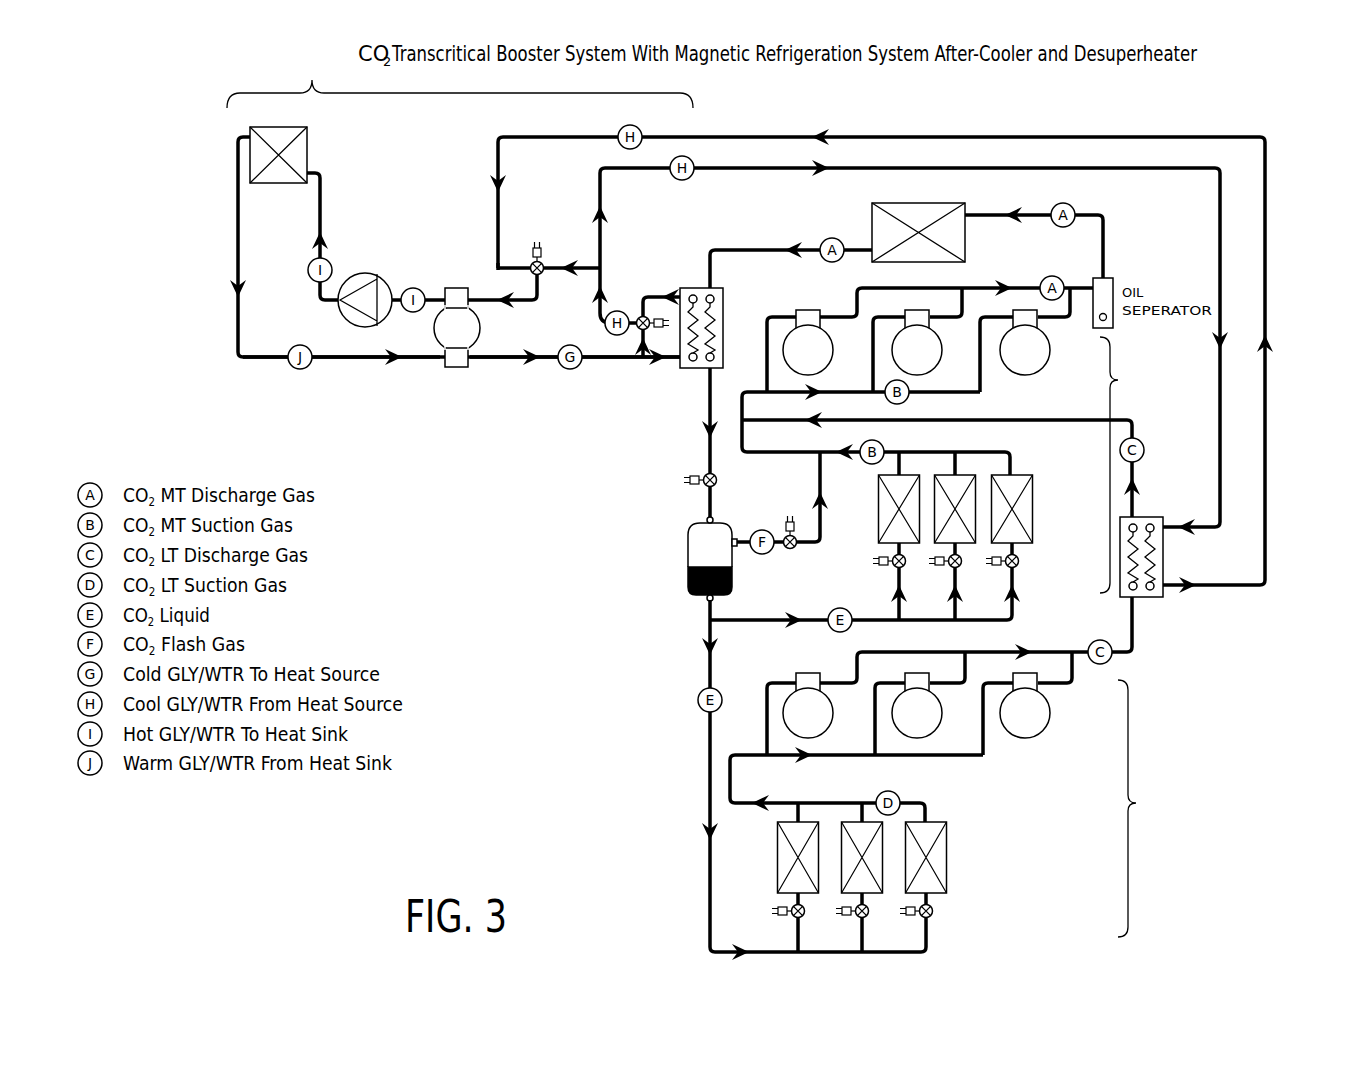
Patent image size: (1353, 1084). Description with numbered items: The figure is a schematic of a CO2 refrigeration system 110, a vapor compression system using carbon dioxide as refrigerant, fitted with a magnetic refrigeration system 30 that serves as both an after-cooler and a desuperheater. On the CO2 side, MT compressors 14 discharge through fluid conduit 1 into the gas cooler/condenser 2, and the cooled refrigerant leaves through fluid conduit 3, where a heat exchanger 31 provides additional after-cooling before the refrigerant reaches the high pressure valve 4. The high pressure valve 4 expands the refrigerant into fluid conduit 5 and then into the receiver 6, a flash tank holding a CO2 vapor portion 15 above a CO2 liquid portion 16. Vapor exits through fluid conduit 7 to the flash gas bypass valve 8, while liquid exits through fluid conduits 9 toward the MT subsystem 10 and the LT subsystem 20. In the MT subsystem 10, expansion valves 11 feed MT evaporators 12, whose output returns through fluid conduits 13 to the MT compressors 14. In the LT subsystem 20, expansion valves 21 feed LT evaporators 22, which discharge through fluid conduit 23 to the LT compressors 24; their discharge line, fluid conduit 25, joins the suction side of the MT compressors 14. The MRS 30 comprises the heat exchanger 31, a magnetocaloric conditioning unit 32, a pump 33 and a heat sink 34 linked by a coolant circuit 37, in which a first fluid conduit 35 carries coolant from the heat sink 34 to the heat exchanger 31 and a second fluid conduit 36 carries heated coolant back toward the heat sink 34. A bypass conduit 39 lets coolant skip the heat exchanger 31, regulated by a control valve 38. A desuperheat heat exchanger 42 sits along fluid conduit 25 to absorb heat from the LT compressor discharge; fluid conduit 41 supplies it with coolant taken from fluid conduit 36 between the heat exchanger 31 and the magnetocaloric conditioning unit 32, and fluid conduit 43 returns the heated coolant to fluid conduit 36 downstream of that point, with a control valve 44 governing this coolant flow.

The fluid conduit 1 is at (1105, 233).
The gas cooler/condenser 2 is at (965, 235).
The fluid conduit 3 is at (742, 248).
The high pressure valve 4 is at (718, 479).
The fluid conduit 5 is at (707, 500).
The receiver 6 is at (688, 574).
The fluid conduit 7 is at (744, 535).
The flash gas bypass valve 8 is at (803, 530).
The fluid conduit 9 is at (739, 627).
The medium-temperature subsystem 10 is at (946, 436).
The expansion valve 11 is at (1020, 567).
The MT evaporator 12 is at (1030, 477).
The fluid conduit 13 is at (825, 458).
The MT compressor 14 is at (1050, 350).
The CO2 vapor portion 15 is at (710, 545).
The CO2 liquid portion 16 is at (710, 581).
The low-temperature subsystem 20 is at (950, 802).
The expansion valve 21 is at (933, 916).
The LT evaporator 22 is at (942, 824).
The fluid conduit 23 is at (732, 808).
The LT compressor 24 is at (1050, 712).
The fluid conduit 25 is at (1136, 622).
The magnetic refrigeration system 30 is at (750, 324).
The heat exchanger 31 is at (708, 287).
The magnetocaloric conditioning unit 32 is at (430, 328).
The pump 33 is at (363, 275).
The heat sink 34 is at (278, 186).
The first fluid conduit 35 is at (503, 360).
The second fluid conduit 36 is at (598, 306).
The coolant circuit 37 is at (398, 378).
The control valve 38 is at (640, 316).
The bypass conduit 39 is at (638, 348).
The first fluid conduit 41 is at (1160, 172).
The desuperheat heat exchanger 42 is at (1162, 518).
The second fluid conduit 43 is at (1127, 135).
The control valve 44 is at (543, 262).
The CO2 refrigeration system 110 is at (1198, 115).